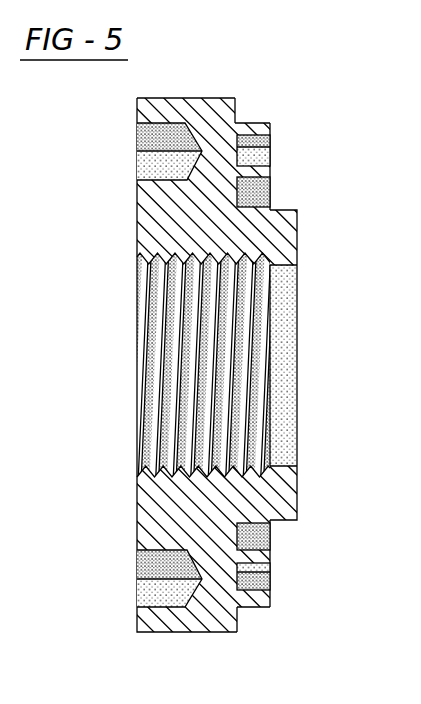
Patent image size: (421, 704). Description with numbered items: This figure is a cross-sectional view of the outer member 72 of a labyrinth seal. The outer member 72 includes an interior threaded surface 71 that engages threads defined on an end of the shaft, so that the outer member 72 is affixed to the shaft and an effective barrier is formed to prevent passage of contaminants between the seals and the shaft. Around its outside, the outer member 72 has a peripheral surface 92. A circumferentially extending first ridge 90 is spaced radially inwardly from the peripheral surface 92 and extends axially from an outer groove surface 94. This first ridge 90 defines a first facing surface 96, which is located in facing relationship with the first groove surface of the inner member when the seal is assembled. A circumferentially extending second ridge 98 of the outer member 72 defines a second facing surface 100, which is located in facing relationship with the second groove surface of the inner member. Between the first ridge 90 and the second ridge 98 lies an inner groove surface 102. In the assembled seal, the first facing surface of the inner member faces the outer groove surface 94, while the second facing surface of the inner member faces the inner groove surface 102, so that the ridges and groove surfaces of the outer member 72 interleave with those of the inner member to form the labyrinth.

The interior threaded surface 71 is at (160, 374).
The outer member 72 is at (203, 632).
The first ridge 90 is at (272, 129).
The peripheral surface 92 is at (212, 97).
The outer groove surface 94 is at (237, 110).
The first facing surface 96 is at (270, 135).
The second ridge 98 is at (292, 228).
The second facing surface 100 is at (270, 182).
The inner groove surface 102 is at (270, 153).